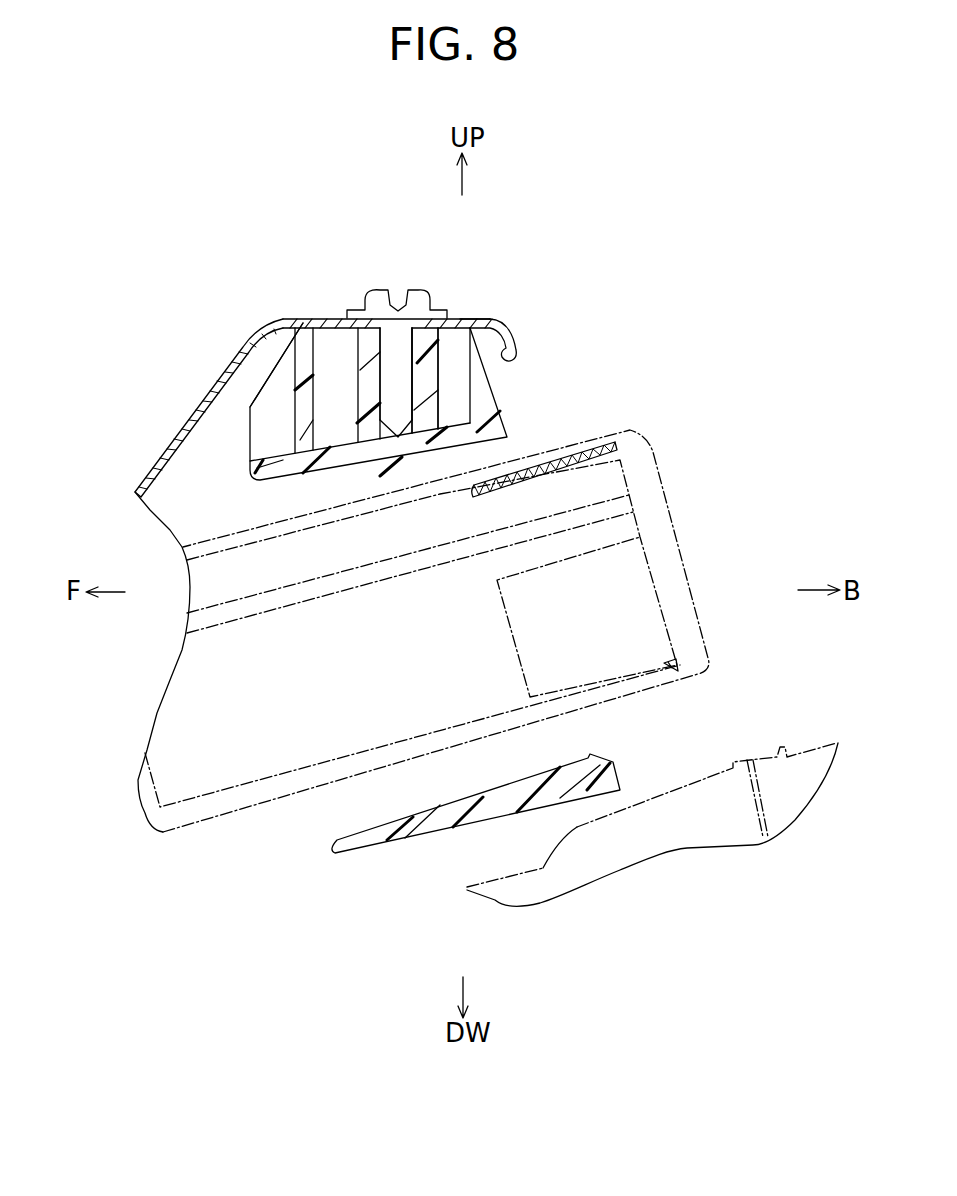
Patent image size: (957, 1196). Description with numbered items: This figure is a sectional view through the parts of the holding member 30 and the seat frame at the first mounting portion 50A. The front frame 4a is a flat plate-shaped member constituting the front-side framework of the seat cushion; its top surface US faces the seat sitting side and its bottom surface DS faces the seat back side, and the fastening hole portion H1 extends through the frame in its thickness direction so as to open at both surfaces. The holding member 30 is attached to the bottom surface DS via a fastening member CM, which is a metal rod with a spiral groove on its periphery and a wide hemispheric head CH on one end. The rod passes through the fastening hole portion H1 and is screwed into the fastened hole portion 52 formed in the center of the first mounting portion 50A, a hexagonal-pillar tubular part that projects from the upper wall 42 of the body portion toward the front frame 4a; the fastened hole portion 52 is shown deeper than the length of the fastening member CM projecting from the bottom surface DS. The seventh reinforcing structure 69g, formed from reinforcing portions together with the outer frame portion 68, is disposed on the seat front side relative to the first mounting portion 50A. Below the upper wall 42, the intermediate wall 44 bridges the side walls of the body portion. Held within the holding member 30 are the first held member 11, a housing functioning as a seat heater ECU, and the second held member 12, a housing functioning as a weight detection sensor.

The first held member 11 is at (672, 560).
The second held member 12 is at (693, 803).
The holding member 30 is at (532, 435).
The upper wall 42 is at (270, 466).
The intermediate wall 44 is at (543, 770).
The outer frame portion 68 is at (273, 407).
The seventh reinforcing structure 69g is at (302, 350).
The first mounting portion 50A is at (430, 365).
The fastened hole portion 52 is at (401, 379).
The fastening hole portion H1 is at (380, 312).
The fastening member CM is at (370, 362).
The head CH is at (417, 300).
The front frame 4a is at (477, 320).
The top surface US is at (507, 330).
The bottom surface DS is at (510, 357).